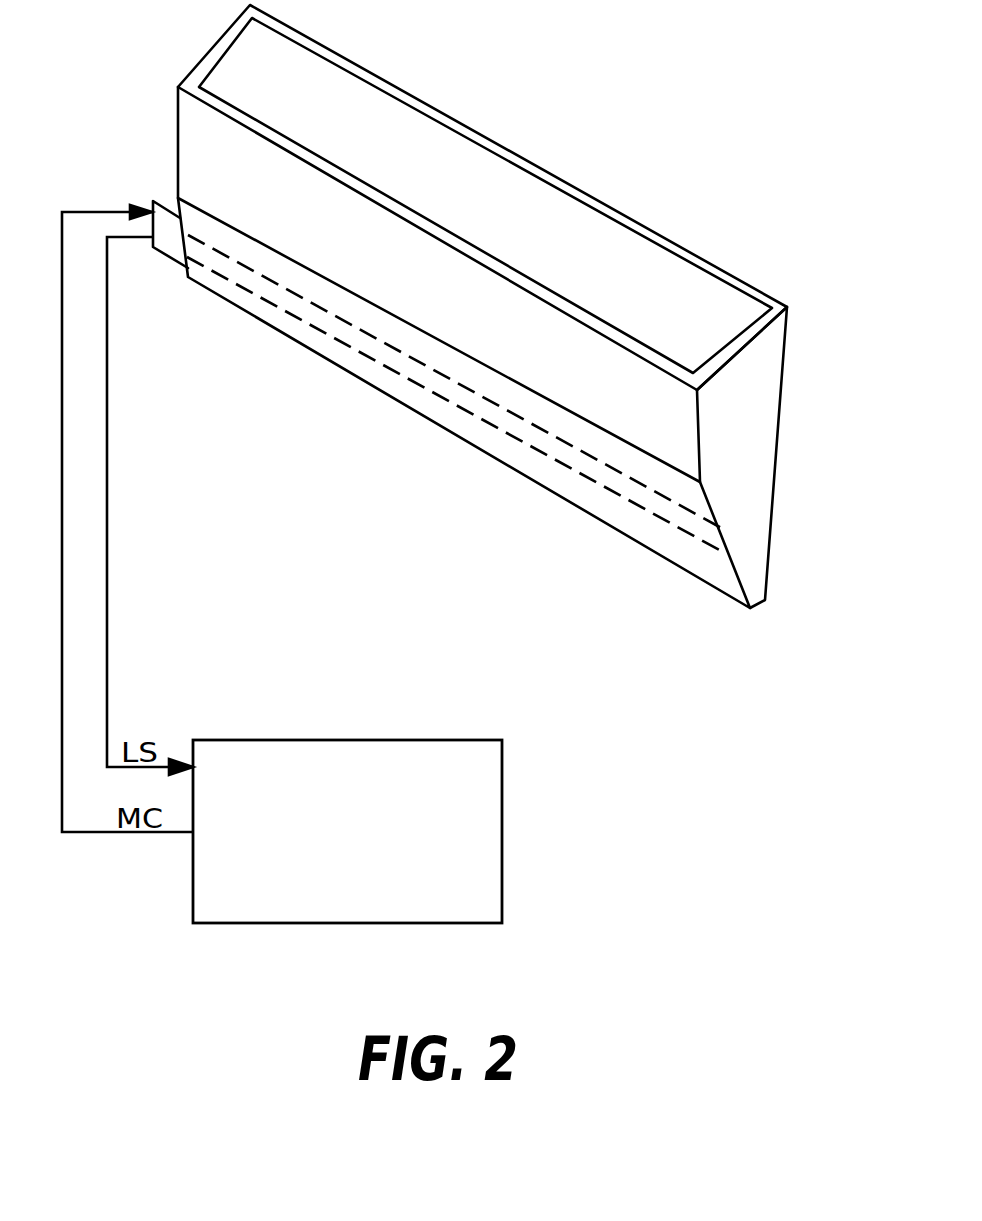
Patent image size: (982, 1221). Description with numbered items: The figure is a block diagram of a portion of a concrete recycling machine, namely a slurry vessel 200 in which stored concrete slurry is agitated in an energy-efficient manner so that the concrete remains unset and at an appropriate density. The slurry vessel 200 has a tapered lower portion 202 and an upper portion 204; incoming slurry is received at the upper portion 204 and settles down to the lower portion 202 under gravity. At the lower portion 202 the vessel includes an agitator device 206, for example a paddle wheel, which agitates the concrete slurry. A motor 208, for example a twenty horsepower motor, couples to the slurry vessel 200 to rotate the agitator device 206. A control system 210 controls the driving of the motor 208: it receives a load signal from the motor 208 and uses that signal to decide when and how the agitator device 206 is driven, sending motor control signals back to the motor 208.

The slurry vessel 200 is at (788, 358).
The tapered lower portion 202 is at (443, 415).
The upper portion 204 is at (192, 150).
The agitator device 206 is at (352, 345).
The motor 208 is at (160, 257).
The control system 210 is at (372, 882).